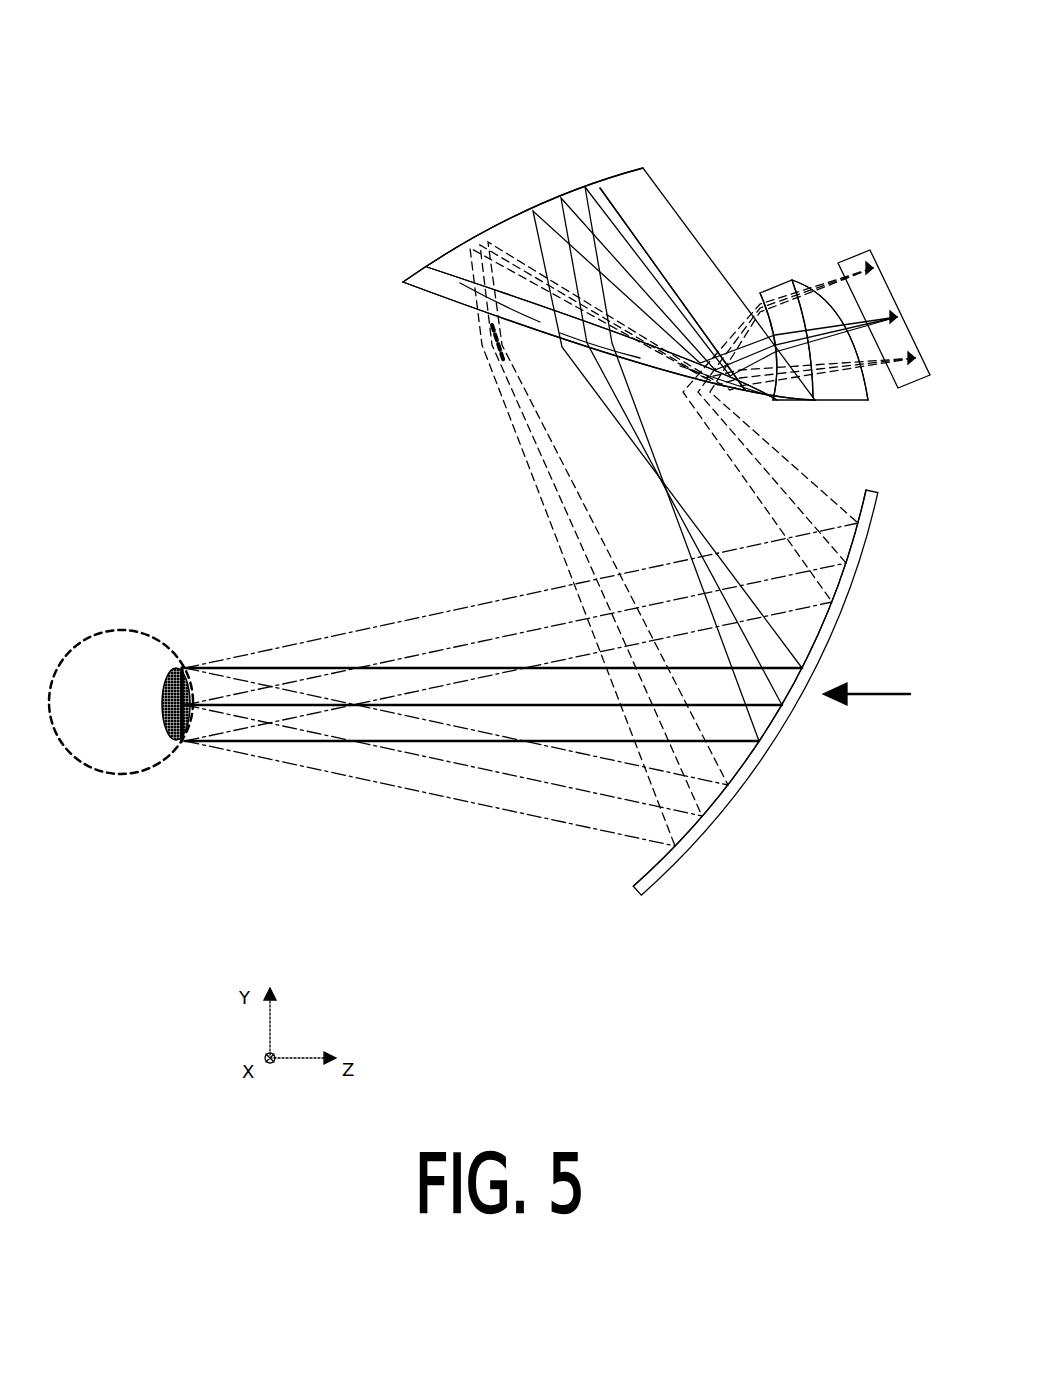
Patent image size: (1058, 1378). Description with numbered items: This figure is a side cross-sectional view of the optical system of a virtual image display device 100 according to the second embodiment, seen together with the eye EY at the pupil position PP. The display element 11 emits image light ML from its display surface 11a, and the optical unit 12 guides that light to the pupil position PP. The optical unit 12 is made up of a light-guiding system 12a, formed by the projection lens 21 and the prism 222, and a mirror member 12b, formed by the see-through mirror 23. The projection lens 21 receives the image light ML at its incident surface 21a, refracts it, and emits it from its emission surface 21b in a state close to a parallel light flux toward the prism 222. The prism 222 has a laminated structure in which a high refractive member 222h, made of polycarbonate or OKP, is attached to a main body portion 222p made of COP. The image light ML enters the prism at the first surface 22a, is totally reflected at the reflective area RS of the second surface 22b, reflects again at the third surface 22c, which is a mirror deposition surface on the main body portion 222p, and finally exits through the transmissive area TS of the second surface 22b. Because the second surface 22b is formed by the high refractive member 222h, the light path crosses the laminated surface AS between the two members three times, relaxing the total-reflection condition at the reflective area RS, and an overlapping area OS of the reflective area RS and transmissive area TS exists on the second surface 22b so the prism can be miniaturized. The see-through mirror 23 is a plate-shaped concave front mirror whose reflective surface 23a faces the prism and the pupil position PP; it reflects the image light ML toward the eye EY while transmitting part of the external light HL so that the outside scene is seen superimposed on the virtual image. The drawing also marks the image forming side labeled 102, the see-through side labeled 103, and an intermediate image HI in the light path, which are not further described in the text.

The virtual image display device 100 is at (477, 110).
The image forming unit 102 is at (647, 140).
The see-through optical element 103 is at (808, 855).
The optical unit 12 is at (305, 155).
The light-guiding system 12a is at (445, 200).
The mirror member 12b is at (805, 795).
The display element 11 is at (887, 297).
The display surface 11a is at (847, 302).
The projection lens 21 is at (805, 300).
The incident surface 21a is at (858, 350).
The emission surface 21b is at (803, 373).
The first surface 22a is at (762, 300).
The second surface 22b is at (547, 335).
The third surface 22c is at (530, 213).
The prism 222 is at (673, 223).
The main body portion 222p is at (697, 263).
The high refractive member 222h is at (443, 292).
The see-through mirror 23 is at (770, 733).
The reflective surface 23a is at (772, 735).
The laminated surface AS is at (527, 317).
The transmissive area TS is at (503, 325).
The overlapping area OS is at (652, 370).
The reflective area RS is at (713, 390).
The image light ML is at (578, 534).
The external light HL is at (857, 688).
The intermediate image HI is at (440, 468).
The eye EY is at (125, 748).
The pupil position PP is at (178, 742).